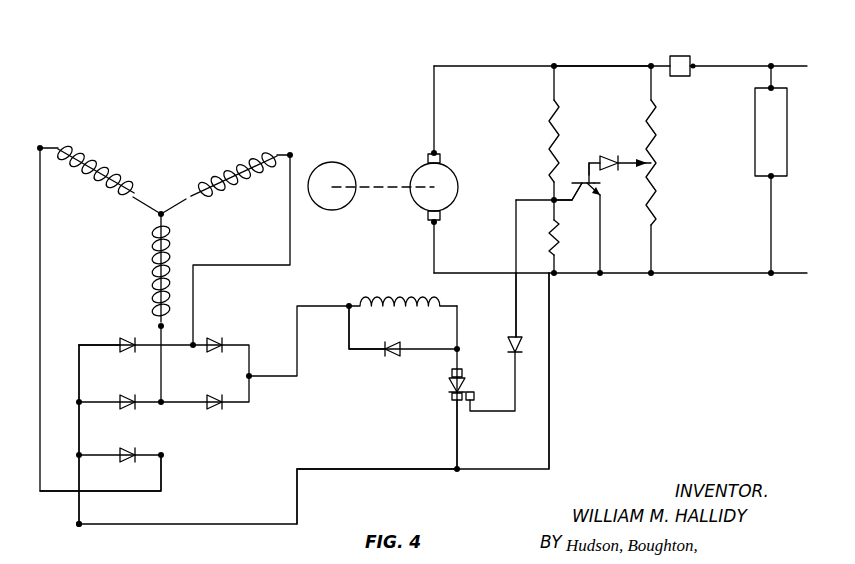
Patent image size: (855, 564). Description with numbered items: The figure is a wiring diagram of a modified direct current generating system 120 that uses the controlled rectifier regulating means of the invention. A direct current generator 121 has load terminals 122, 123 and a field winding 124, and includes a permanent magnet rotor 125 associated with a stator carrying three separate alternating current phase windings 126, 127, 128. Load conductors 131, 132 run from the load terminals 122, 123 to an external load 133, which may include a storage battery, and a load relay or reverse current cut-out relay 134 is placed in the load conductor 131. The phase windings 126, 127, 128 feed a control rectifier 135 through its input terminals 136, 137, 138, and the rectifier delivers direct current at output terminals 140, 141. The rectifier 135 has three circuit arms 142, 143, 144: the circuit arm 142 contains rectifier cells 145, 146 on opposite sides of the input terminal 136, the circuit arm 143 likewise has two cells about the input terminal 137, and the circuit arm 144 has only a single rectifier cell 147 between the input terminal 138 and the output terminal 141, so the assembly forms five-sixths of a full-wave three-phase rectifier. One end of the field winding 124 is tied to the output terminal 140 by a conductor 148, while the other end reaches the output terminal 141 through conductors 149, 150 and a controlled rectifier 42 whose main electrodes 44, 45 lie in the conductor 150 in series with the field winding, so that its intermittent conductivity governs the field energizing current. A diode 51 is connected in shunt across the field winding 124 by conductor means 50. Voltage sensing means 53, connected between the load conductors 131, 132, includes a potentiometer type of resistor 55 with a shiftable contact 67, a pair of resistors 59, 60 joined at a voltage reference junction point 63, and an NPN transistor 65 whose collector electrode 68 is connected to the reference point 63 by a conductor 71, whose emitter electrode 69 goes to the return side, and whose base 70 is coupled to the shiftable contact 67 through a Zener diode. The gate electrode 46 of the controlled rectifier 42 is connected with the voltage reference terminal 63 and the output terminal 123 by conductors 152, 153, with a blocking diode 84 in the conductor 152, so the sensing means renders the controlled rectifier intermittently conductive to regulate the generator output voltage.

The controlled rectifier 42 is at (450, 384).
The main electrode 44 is at (462, 373).
The main electrode 45 is at (454, 395).
The gate electrode 46 is at (475, 399).
The conductor means 50 is at (406, 345).
The diode 51 is at (387, 356).
The voltage sensing means 53 is at (625, 150).
The potentiometer type of resistor 55 is at (654, 150).
The resistor 59 is at (547, 155).
The resistor 60 is at (542, 236).
The voltage reference junction point 63 is at (550, 199).
The transistor 65 is at (573, 182).
The shiftable contact 67 is at (610, 171).
The collector electrode 68 is at (573, 199).
The emitter electrode 69 is at (603, 198).
The base 70 is at (600, 184).
The conductor 71 is at (567, 208).
The blocking diode 84 is at (520, 345).
The generating system 120 is at (518, 55).
The direct current generator 121 is at (449, 170).
The load terminal 122 is at (426, 157).
The load terminal 123 is at (426, 217).
The field winding 124 is at (411, 309).
The permanent magnet rotor 125 is at (324, 162).
The alternating current phase winding 126 is at (233, 195).
The alternating current phase winding 127 is at (85, 161).
The alternating current phase winding 128 is at (148, 262).
The load conductor 131 is at (608, 50).
The load conductor 132 is at (675, 276).
The external load 133 is at (751, 162).
The load relay 134 is at (683, 77).
The control rectifier 135 is at (206, 437).
The input terminal 136 is at (193, 352).
The input terminal 137 is at (164, 401).
The input terminal 138 is at (164, 455).
The direct current output terminal 140 is at (252, 378).
The direct current output terminal 141 is at (79, 527).
The circuit arm 142 is at (145, 340).
The circuit arm 143 is at (146, 400).
The circuit arm 144 is at (146, 453).
The rectifier cell 145 is at (123, 342).
The rectifier cell 146 is at (212, 342).
The rectifier cell 147 is at (127, 465).
The conductor 148 is at (297, 341).
The conductor 149 is at (342, 467).
The conductor 150 is at (457, 421).
The conductor 152 is at (508, 327).
The conductor 153 is at (554, 338).